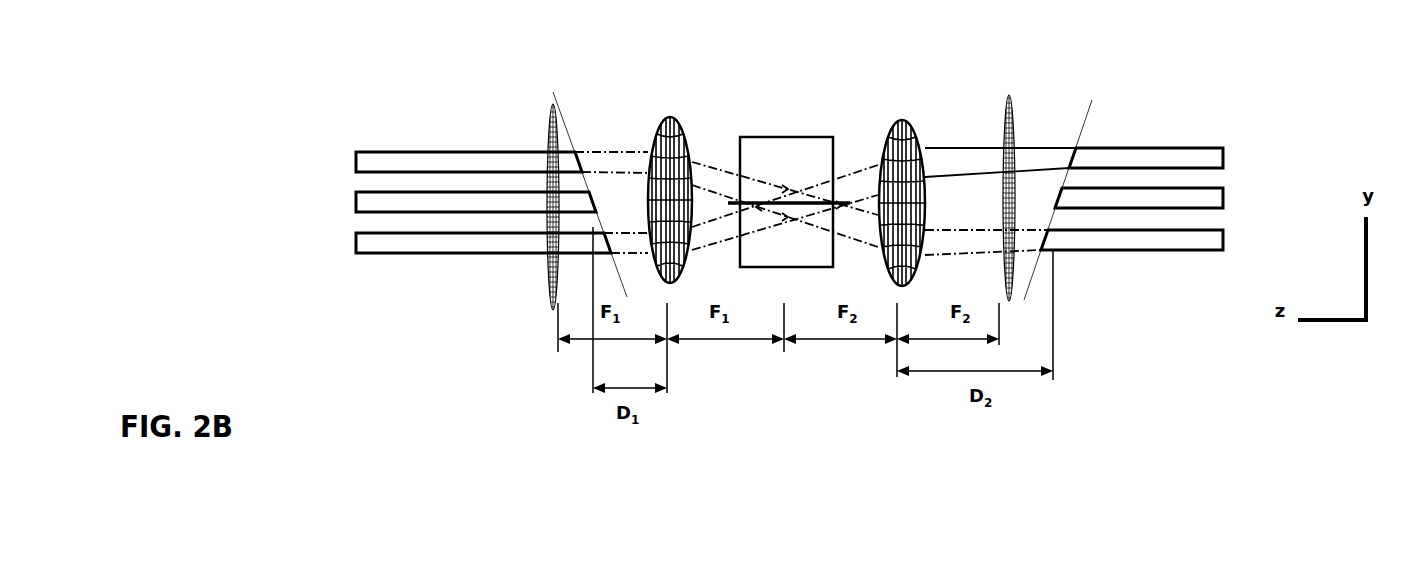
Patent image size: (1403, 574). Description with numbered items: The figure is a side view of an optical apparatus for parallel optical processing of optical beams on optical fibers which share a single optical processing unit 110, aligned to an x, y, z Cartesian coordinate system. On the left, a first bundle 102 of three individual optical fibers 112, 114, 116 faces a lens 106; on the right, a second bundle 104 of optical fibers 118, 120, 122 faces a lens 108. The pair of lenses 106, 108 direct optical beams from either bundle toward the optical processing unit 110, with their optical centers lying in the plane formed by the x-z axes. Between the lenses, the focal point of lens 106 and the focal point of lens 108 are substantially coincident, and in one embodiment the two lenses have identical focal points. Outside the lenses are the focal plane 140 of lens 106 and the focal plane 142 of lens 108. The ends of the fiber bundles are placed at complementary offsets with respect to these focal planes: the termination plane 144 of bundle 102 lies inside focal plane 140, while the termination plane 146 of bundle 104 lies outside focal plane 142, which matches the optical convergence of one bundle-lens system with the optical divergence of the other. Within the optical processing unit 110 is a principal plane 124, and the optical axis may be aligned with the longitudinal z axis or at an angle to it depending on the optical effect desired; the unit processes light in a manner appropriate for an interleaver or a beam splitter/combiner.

The first bundle of optical fibers 102 is at (412, 114).
The second bundle of optical fibers 104 is at (1157, 108).
The lens 106 is at (668, 118).
The lens 108 is at (902, 120).
The optical processing unit 110 is at (773, 145).
The optical fiber 112 is at (370, 248).
The optical fiber 114 is at (368, 210).
The optical fiber 116 is at (371, 162).
The optical fiber 118 is at (1205, 158).
The optical fiber 120 is at (1200, 200).
The optical fiber 122 is at (1205, 242).
The principal plane 124 is at (838, 203).
The focal plane 140 is at (552, 130).
The focal plane 142 is at (1006, 96).
The termination plane 144 is at (571, 130).
The termination plane 146 is at (1087, 100).